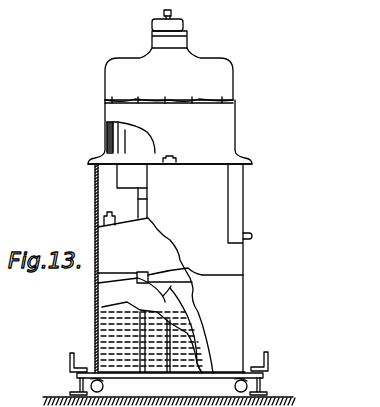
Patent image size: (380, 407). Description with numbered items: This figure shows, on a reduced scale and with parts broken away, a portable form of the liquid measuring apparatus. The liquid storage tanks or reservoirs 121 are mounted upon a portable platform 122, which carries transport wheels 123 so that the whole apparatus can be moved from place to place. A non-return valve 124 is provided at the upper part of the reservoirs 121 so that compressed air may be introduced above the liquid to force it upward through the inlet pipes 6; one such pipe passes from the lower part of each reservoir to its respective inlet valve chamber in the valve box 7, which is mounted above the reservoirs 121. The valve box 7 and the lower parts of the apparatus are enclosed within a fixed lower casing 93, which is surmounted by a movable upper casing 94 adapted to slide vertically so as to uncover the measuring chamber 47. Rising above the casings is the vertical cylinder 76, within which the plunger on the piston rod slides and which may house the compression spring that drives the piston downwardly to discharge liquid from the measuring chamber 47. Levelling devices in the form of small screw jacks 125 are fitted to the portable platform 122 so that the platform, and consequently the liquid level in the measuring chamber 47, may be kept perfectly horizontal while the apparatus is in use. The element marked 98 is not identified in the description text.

The vertical cylinder 76 is at (180, 37).
The measuring chamber 47 is at (142, 143).
The movable upper casing 94 is at (232, 127).
The valve box 7 is at (122, 178).
The inlet pipe 6 is at (142, 197).
The non-return valve 124 is at (103, 222).
The fixed lower casing 93 is at (170, 279).
The inner liner 98 is at (237, 200).
The liquid storage tank 121 is at (110, 327).
The portable platform 122 is at (223, 373).
The screw jack 125 is at (70, 358).
The transport wheel 123 is at (80, 385).